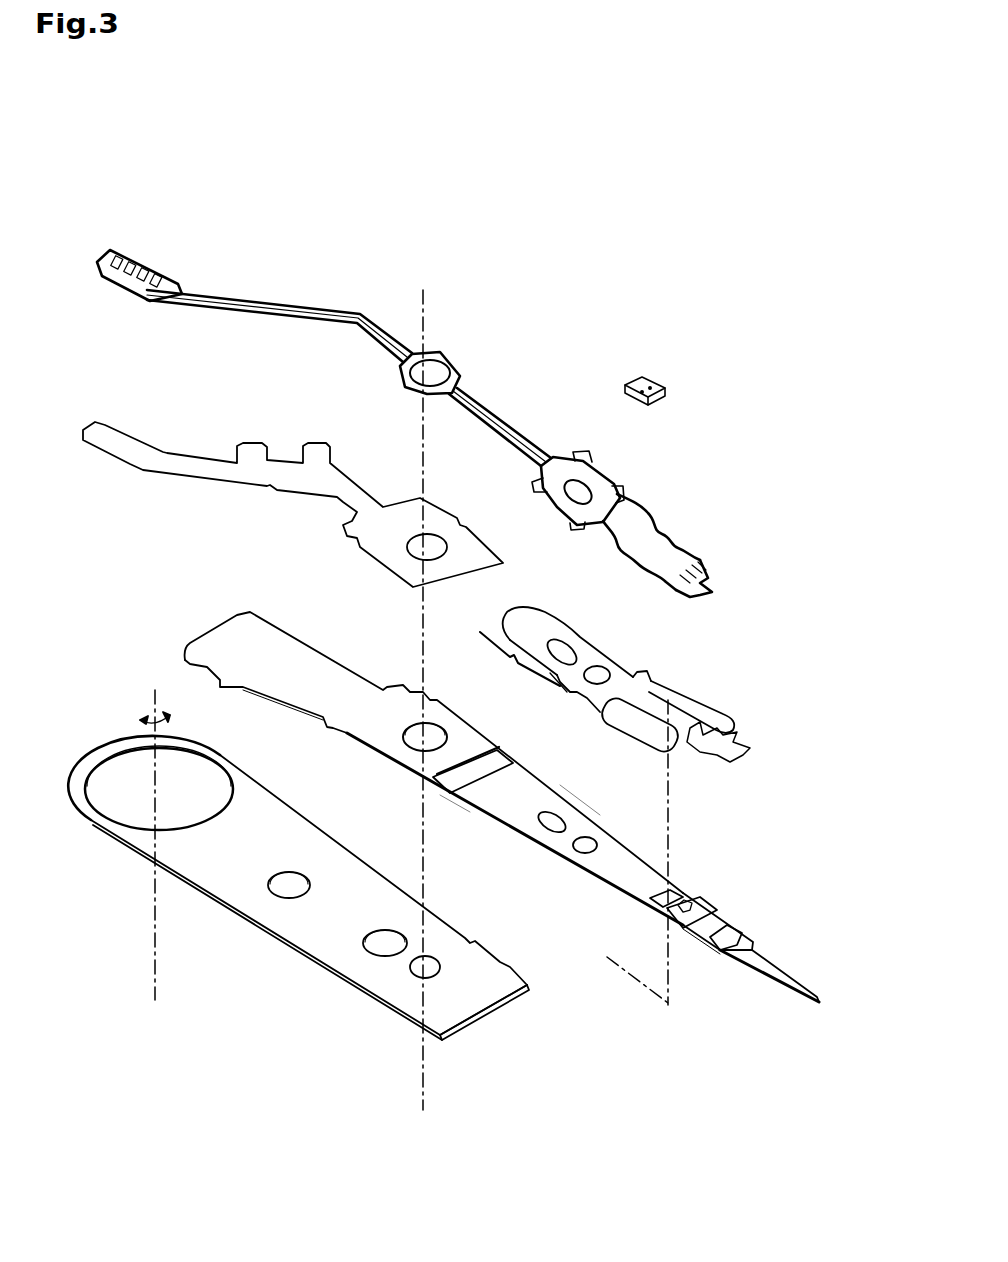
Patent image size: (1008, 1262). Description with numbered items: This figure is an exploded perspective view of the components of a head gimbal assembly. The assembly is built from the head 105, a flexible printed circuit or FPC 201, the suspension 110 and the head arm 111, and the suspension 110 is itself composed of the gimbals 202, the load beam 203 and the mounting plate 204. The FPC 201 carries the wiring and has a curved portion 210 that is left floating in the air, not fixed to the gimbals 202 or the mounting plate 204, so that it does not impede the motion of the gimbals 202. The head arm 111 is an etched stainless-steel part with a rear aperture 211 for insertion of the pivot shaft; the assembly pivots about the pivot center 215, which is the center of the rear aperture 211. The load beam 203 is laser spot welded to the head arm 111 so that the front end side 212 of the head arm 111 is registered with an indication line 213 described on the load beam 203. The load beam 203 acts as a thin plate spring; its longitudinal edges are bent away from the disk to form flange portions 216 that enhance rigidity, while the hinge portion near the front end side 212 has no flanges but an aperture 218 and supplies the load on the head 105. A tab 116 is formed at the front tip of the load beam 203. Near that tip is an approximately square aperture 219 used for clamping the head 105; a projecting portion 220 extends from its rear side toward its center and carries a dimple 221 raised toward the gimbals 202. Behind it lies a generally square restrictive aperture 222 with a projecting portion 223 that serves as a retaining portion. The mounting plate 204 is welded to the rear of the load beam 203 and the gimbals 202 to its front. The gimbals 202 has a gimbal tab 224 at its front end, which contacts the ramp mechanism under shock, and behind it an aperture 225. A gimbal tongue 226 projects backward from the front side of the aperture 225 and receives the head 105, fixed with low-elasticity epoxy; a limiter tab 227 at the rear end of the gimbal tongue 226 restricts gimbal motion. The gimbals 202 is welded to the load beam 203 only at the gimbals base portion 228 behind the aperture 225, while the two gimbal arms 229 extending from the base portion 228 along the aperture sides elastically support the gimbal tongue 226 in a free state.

The head 105 is at (632, 381).
The suspension 110 is at (846, 690).
The head arm 111 is at (287, 933).
The tab 116 is at (812, 990).
The FPC (flexible printed circuit) 201 is at (722, 567).
The gimbals 202 is at (580, 637).
The load beam 203 is at (600, 876).
The mounting plate 204 is at (337, 527).
The curved portion 210 is at (705, 535).
The rear aperture 211 is at (103, 810).
The front end side 212 is at (478, 1016).
The indication line 213 is at (540, 735).
The pivot center 215 is at (150, 690).
The flange portions 216 is at (580, 797).
The aperture 218 is at (455, 800).
The aperture 219 is at (745, 927).
The projecting portion 220 is at (687, 932).
The dimple 221 is at (688, 897).
The restrictive aperture 222 is at (684, 898).
The projecting portion 223 is at (665, 895).
The gimbal tab 224 is at (750, 750).
The aperture 225 is at (650, 688).
The gimbal tongue 226 is at (712, 720).
The limiter tab 227 is at (610, 722).
The gimbals base portion 228 is at (522, 662).
The gimbal arms 229 is at (640, 700).